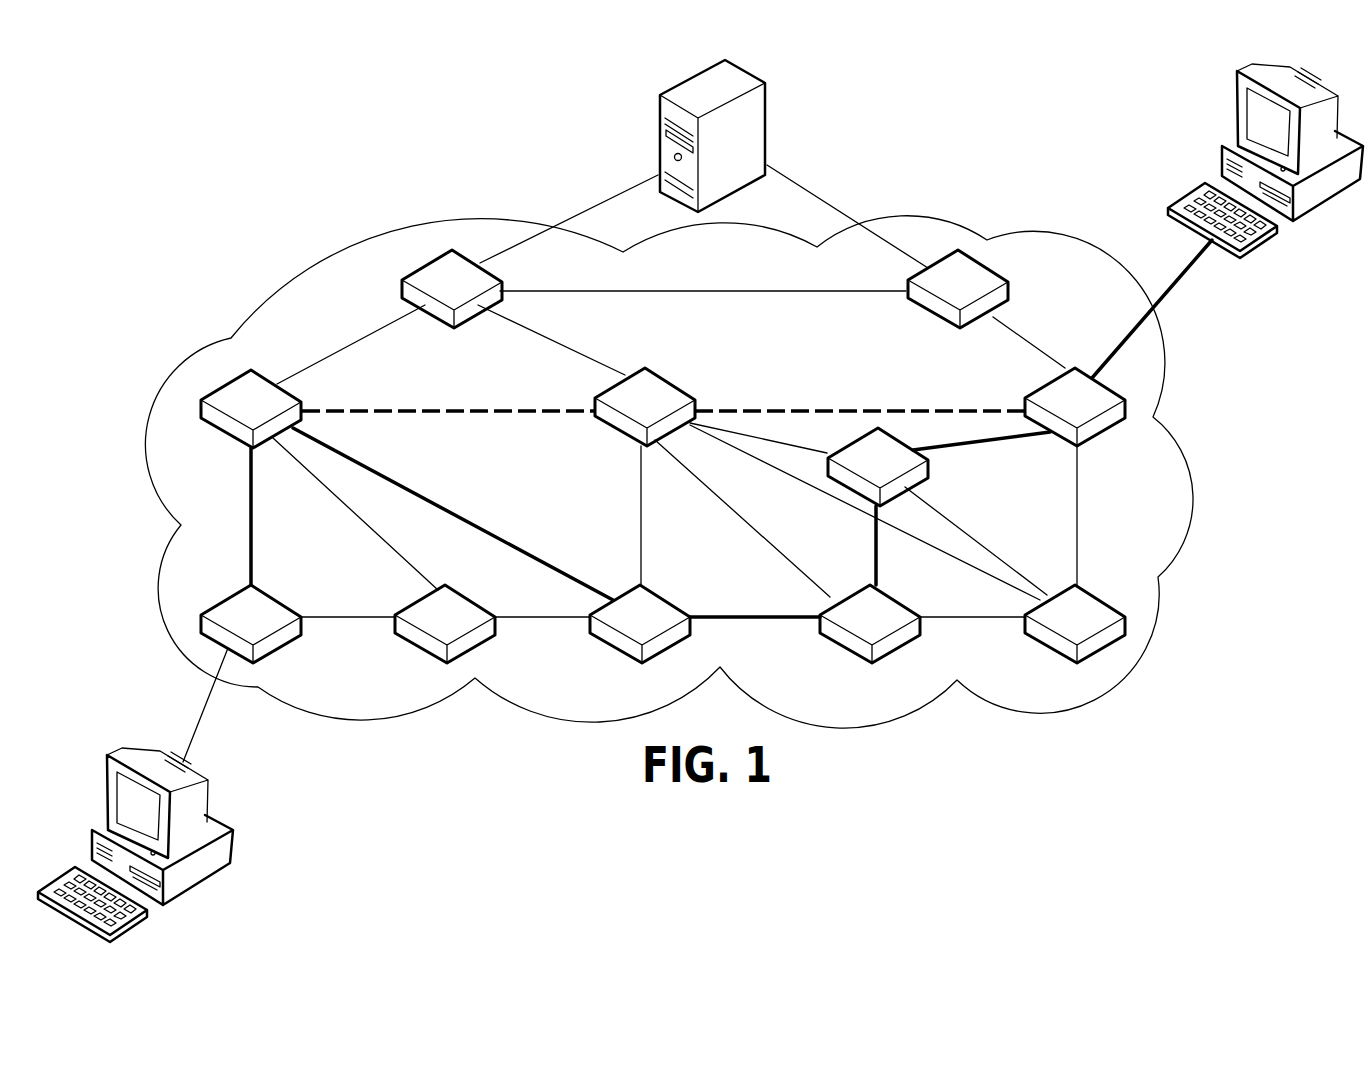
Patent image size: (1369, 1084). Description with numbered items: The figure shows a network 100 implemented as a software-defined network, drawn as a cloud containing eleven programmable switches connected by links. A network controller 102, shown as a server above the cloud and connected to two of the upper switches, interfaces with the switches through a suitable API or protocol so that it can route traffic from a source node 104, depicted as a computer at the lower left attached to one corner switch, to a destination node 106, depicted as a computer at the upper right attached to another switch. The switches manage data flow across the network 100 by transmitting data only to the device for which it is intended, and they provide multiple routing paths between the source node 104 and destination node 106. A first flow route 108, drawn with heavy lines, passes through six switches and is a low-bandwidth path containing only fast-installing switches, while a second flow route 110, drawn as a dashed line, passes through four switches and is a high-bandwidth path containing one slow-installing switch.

The network 100 is at (384, 182).
The network controller 102 is at (658, 146).
The source node 104 is at (105, 795).
The destination node 106 is at (1233, 110).
The first flow route 108 is at (487, 530).
The second flow route 110 is at (450, 410).